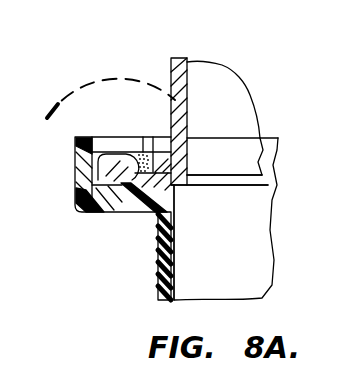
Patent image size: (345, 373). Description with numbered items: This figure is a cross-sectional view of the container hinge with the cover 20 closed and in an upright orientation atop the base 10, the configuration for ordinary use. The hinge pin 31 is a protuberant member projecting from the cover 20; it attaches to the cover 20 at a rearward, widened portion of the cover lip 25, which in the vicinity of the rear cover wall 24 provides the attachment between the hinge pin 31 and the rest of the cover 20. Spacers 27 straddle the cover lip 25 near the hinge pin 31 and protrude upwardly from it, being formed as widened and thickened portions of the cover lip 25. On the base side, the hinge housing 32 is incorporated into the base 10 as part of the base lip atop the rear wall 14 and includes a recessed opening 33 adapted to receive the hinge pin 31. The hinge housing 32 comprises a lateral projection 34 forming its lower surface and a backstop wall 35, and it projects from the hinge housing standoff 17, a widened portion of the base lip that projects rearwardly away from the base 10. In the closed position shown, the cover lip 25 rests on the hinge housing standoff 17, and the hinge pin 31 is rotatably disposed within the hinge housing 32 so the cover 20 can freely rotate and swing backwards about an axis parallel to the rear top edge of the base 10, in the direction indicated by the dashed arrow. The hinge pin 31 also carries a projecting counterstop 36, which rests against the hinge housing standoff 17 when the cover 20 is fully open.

The base 10 is at (156, 291).
The rear wall 14 is at (158, 273).
The hinge housing standoff 17 is at (147, 213).
The cover 20 is at (232, 72).
The rear cover wall 24 is at (182, 60).
The cover lip 25 is at (178, 188).
The spacers 27 is at (156, 160).
The hinge pin 31 is at (110, 157).
The hinge housing 32 is at (74, 199).
The recessed opening 33 is at (108, 213).
The lateral projection 34 is at (97, 213).
The backstop wall 35 is at (86, 192).
The counterstop 36 is at (88, 170).